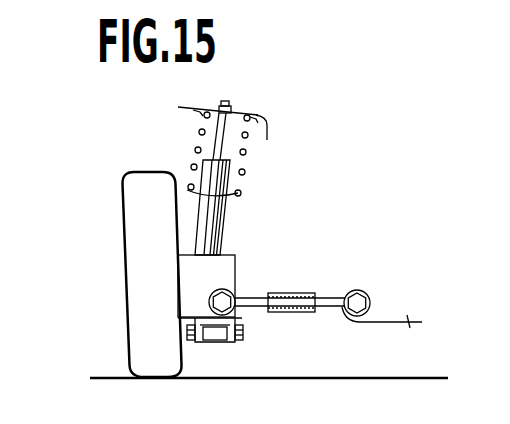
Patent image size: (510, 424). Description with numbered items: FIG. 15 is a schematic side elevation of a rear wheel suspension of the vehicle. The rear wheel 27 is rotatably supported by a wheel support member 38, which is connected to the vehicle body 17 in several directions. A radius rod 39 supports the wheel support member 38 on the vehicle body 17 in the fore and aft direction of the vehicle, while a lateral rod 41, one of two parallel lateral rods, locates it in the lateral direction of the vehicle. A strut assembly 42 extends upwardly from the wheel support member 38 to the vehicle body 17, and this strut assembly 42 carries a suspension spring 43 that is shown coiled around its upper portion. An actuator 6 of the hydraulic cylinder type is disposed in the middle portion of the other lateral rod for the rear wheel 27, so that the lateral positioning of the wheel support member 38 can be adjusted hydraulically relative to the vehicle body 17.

The actuator 6 is at (300, 295).
The vehicle body 17 is at (243, 113).
The rear wheel 27 is at (125, 250).
The wheel support member 38 is at (228, 272).
The radius rod 39 is at (217, 337).
The lateral rod 41 is at (252, 312).
The strut assembly 42 is at (223, 227).
The suspension spring 43 is at (246, 171).